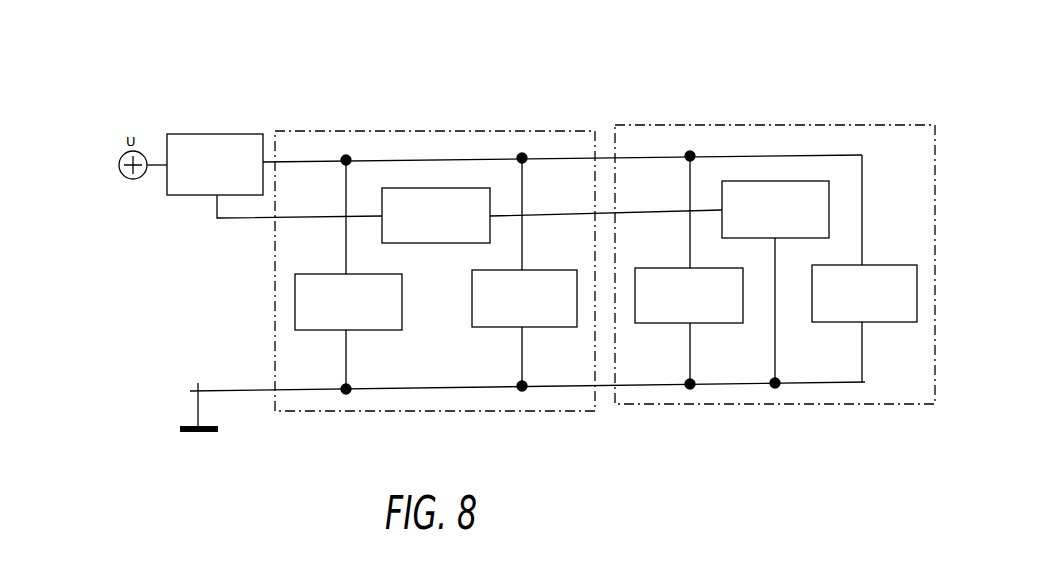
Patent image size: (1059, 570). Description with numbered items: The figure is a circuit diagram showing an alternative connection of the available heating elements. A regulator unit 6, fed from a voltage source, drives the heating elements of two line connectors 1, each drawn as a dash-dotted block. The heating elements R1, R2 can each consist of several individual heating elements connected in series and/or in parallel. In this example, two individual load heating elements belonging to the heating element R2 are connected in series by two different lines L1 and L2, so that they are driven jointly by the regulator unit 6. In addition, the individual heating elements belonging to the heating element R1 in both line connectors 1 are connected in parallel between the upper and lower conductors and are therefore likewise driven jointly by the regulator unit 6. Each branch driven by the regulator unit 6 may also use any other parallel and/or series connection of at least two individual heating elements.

The line connector 1 is at (376, 114).
The regulator unit 6 is at (228, 188).
The heating element R1 is at (402, 334).
The heating element R2 is at (668, 136).
The line L1 is at (434, 186).
The line L2 is at (766, 179).